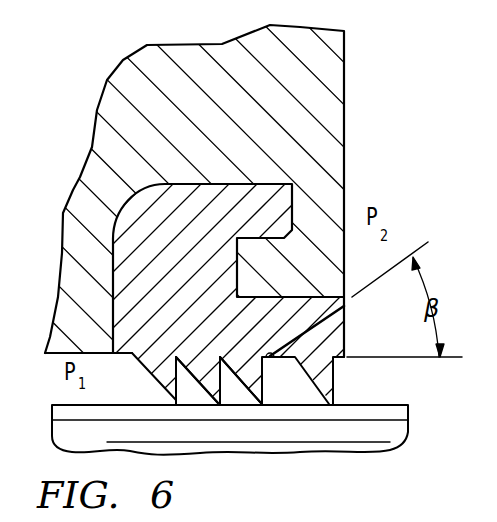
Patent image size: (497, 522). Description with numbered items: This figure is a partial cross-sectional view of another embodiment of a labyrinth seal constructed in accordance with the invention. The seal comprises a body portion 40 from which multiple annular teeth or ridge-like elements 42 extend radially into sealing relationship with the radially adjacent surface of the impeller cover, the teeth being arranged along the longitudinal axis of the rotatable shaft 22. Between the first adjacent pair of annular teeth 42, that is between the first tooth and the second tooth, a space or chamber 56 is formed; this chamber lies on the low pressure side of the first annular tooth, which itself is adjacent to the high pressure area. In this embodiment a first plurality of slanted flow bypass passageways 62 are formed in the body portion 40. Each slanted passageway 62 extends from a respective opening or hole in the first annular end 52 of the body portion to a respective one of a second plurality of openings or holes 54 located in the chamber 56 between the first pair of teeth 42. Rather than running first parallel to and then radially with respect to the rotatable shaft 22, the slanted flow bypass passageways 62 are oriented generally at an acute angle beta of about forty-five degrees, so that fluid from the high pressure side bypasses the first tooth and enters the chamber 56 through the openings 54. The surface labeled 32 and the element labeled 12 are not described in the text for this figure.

The body 12 is at (223, 130).
The rotatable shaft 22 is at (296, 443).
The side wall surface 32 is at (106, 252).
The body portion 40 is at (193, 250).
The annular teeth or ridge-like elements 42 is at (221, 407).
The first annular end 52 is at (347, 348).
The second plurality of openings or holes 54 is at (253, 364).
The space or chamber 56 is at (298, 397).
The slanted flow bypass passageways 62 is at (338, 310).